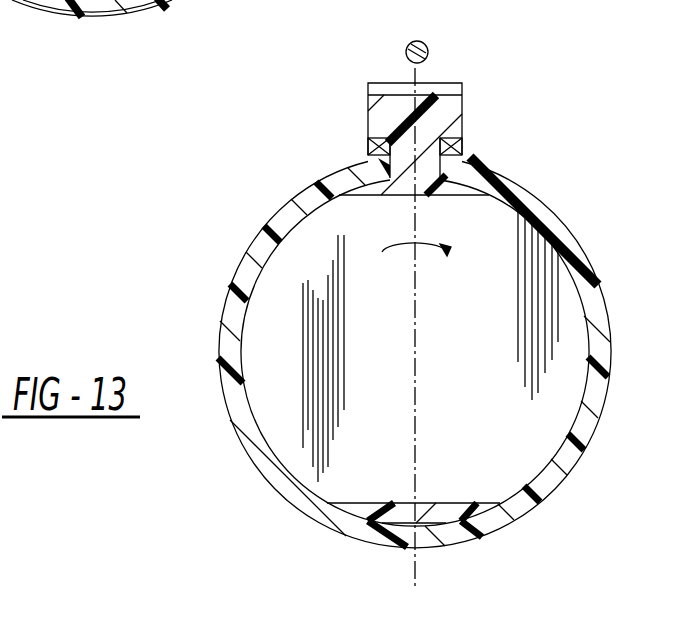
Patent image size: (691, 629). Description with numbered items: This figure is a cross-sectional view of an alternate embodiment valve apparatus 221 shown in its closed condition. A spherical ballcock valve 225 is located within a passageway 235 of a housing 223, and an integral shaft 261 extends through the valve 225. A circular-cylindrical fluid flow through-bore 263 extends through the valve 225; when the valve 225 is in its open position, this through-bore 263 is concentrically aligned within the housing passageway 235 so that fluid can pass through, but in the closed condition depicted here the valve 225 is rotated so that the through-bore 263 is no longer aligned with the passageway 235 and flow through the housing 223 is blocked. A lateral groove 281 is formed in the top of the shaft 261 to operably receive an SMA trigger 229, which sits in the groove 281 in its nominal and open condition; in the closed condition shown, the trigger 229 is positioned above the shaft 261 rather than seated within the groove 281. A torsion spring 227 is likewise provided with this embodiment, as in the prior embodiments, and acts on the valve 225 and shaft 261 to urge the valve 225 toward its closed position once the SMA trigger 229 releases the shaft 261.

The valve apparatus 221 is at (521, 58).
The housing 223 is at (548, 203).
The spherical ballcock valve 225 is at (496, 357).
The torsion spring 227 is at (463, 150).
The SMA trigger 229 is at (406, 46).
The passageway 235 is at (244, 360).
The shaft 261 is at (398, 112).
The fluid flow through-bore 263 is at (448, 503).
The lateral groove 281 is at (383, 88).